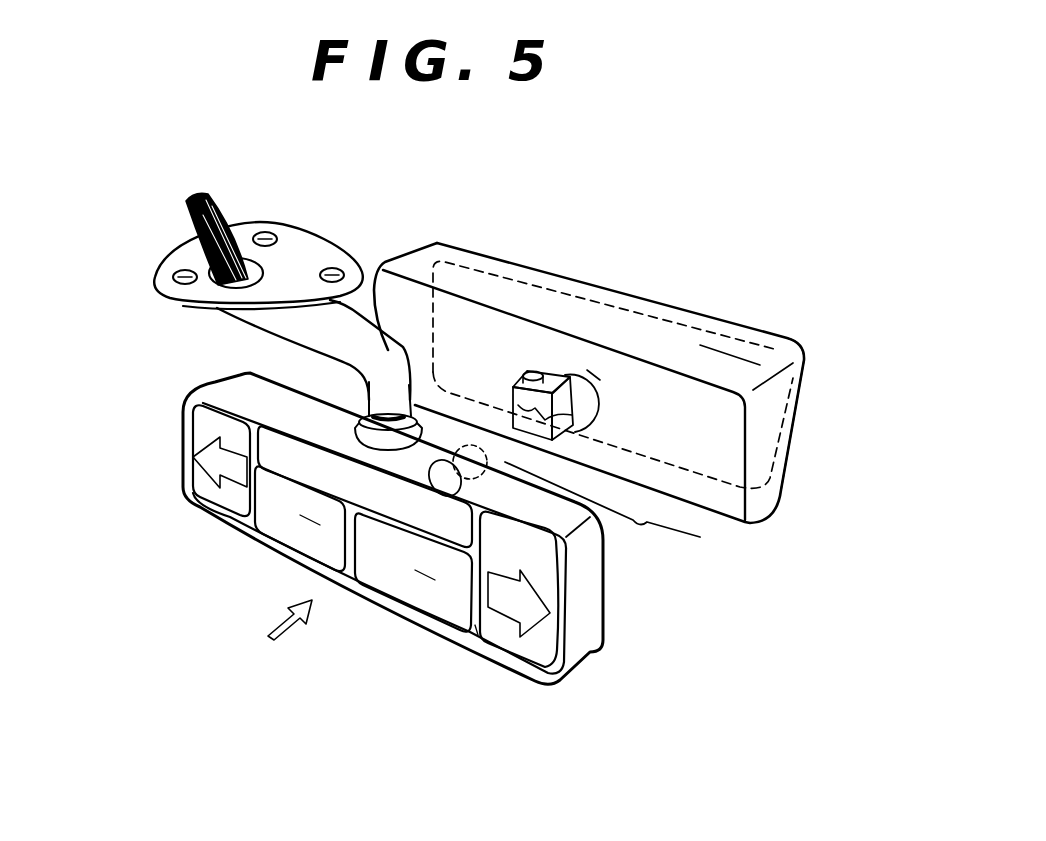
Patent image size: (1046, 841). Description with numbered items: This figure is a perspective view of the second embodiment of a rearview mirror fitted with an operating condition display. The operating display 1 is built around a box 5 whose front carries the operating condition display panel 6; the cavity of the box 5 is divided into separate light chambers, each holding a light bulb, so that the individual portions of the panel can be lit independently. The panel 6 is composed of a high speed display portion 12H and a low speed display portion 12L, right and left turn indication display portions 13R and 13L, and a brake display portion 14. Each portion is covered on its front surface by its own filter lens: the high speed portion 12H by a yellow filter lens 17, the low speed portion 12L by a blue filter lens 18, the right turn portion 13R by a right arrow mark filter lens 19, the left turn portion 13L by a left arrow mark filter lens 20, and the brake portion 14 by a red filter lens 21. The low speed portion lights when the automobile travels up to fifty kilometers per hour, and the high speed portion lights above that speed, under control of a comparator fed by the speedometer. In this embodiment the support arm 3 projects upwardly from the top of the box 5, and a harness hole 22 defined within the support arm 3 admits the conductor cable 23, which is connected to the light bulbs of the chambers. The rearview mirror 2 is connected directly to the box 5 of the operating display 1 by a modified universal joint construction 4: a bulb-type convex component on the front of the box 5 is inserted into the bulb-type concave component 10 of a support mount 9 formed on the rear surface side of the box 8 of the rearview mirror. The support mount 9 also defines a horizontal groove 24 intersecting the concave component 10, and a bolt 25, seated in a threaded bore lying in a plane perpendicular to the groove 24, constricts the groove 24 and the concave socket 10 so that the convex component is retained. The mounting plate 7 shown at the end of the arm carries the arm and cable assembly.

The operating display 1 is at (560, 685).
The rearview mirror 2 is at (785, 358).
The support arm 3 is at (387, 262).
The universal joint construction 4 is at (478, 350).
The box 5 is at (590, 640).
The operating condition display panel 6 is at (279, 628).
The mounting plate 7 is at (290, 247).
The box of the rearview mirror 8 is at (730, 360).
The support mount 9 is at (545, 375).
The bulb-type concave component 10 is at (700, 537).
The speed display portion (high speed) 12H is at (275, 522).
The speed display portion (low speed) 12L is at (378, 570).
The right turn indication display portion 13R is at (178, 437).
The left turn indication display portion 13L is at (533, 652).
The brake display portion 14 is at (303, 461).
The yellow filter lens 17 is at (310, 535).
The blue filter lens 18 is at (430, 583).
The right arrow mark filter lens 19 is at (201, 413).
The left arrow mark filter lens 20 is at (487, 632).
The red filter lens 21 is at (252, 458).
The harness hole 22 is at (240, 256).
The conductor cable 23 is at (186, 217).
The groove 24 is at (583, 400).
The bolt 25 is at (530, 370).